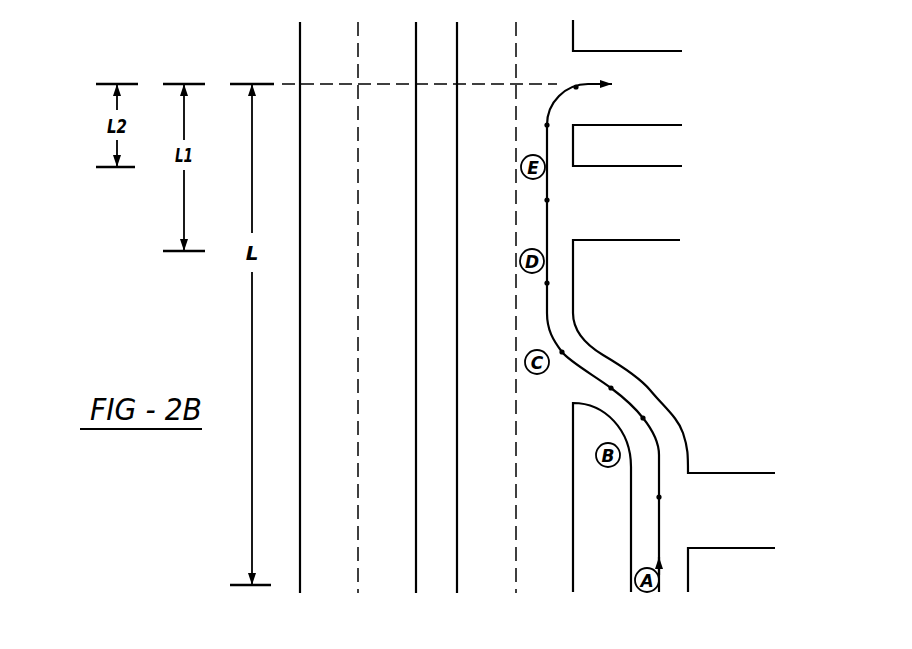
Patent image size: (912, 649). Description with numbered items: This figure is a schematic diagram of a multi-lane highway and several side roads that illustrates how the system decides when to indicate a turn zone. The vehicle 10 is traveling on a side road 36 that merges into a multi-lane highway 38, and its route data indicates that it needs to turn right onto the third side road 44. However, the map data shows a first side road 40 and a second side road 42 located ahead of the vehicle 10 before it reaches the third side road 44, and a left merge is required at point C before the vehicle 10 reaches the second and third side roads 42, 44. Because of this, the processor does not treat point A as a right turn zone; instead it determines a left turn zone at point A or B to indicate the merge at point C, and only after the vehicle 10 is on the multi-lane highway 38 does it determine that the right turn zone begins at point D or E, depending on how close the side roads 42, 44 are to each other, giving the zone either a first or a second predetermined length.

The vehicle 10 is at (616, 338).
The side road 36 is at (650, 498).
The multi-lane highway 38 is at (438, 568).
The first side road 40 is at (778, 487).
The second side road 42 is at (672, 192).
The third side road 44 is at (670, 75).